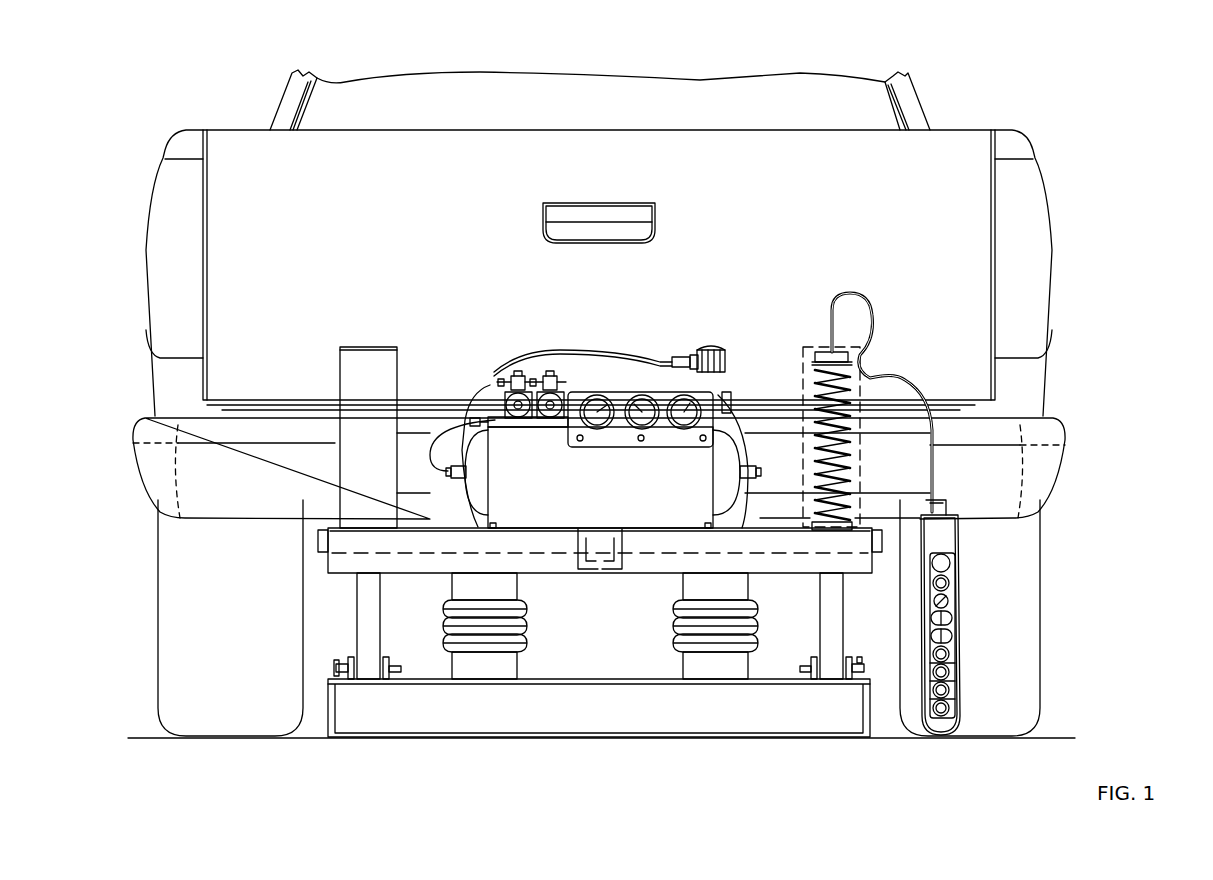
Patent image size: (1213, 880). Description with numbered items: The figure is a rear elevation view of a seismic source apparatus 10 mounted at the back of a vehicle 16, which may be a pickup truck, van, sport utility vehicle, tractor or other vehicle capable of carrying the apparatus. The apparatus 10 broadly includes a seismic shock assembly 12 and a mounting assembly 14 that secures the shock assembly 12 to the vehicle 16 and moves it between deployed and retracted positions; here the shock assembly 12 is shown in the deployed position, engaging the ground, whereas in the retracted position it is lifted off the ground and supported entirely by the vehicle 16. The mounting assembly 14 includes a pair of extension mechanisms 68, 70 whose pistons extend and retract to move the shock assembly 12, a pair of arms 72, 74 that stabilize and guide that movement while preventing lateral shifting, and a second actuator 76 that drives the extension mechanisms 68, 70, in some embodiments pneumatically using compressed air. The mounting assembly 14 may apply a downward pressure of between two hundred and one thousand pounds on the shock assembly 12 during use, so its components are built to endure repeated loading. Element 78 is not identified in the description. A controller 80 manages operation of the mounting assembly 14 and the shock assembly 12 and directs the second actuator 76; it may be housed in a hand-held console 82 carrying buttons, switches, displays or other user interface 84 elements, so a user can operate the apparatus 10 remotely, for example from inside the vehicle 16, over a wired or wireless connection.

The seismic source apparatus 10 is at (302, 343).
The seismic shock assembly 12 is at (392, 724).
The mounting assembly 14 is at (322, 563).
The vehicle 16 is at (1043, 130).
The extension mechanism 68 is at (518, 620).
The extension mechanism 70 is at (683, 633).
The arm 72 is at (365, 617).
The arm 74 is at (836, 614).
The second actuator 76 is at (467, 462).
The air compressor 78 is at (748, 370).
The controller 80 is at (964, 707).
The console 82 is at (945, 537).
The user interface 84 is at (955, 673).